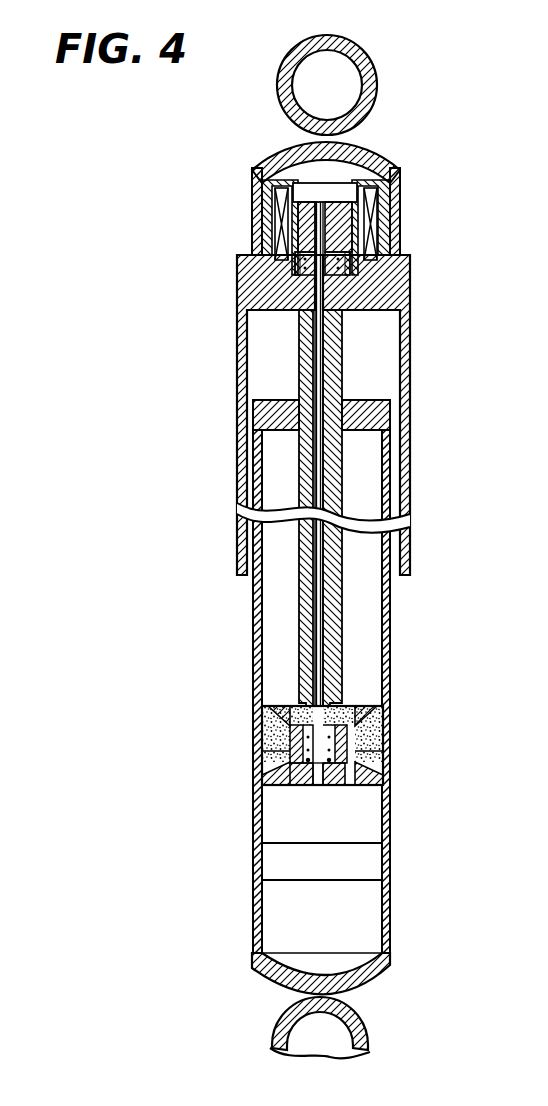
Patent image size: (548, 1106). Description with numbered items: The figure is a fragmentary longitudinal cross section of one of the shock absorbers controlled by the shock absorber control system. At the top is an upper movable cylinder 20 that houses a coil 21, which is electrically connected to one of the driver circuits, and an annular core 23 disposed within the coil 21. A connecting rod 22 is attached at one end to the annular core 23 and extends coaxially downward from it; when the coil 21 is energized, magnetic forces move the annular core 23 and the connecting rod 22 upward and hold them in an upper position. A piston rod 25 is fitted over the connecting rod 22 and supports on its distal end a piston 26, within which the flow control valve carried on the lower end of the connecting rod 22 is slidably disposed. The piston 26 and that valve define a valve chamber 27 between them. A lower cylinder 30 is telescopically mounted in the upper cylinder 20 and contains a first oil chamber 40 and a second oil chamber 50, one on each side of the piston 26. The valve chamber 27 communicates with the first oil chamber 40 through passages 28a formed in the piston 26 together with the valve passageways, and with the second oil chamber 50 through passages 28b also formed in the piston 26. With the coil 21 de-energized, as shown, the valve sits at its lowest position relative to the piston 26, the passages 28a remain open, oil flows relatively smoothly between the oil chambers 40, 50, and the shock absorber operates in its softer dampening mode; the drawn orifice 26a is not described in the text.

The upper movable cylinder 20 is at (412, 353).
The coil 21 is at (348, 219).
The connecting rod 22 is at (343, 452).
The annular core 23 is at (378, 207).
The piston rod 25 is at (343, 490).
The piston 26 is at (297, 786).
The piston orifice 26a is at (318, 789).
The valve chamber 27 is at (265, 748).
The passages 28a is at (267, 773).
The passages 28b is at (275, 718).
The lower cylinder 30 is at (341, 758).
The first oil chamber 40 is at (368, 822).
The second oil chamber 50 is at (367, 642).